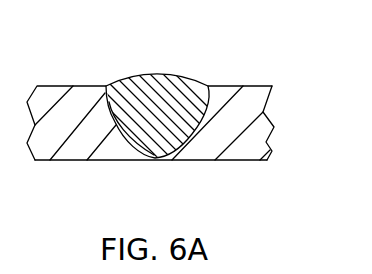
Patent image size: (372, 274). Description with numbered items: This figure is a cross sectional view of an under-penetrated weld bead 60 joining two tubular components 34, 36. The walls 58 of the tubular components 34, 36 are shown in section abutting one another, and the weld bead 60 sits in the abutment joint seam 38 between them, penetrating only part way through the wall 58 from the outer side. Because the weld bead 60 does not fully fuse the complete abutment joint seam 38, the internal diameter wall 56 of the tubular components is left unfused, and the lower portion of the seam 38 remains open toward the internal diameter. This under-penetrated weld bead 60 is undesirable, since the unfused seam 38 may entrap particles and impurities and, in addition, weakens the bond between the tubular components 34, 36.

The tubular component 34 is at (93, 85).
The tubular component 36 is at (236, 86).
The abutment joint seam 38 is at (155, 157).
The internal diameter wall 56 is at (110, 160).
The wall 58 is at (263, 123).
The under-penetrated weld bead 60 is at (168, 78).